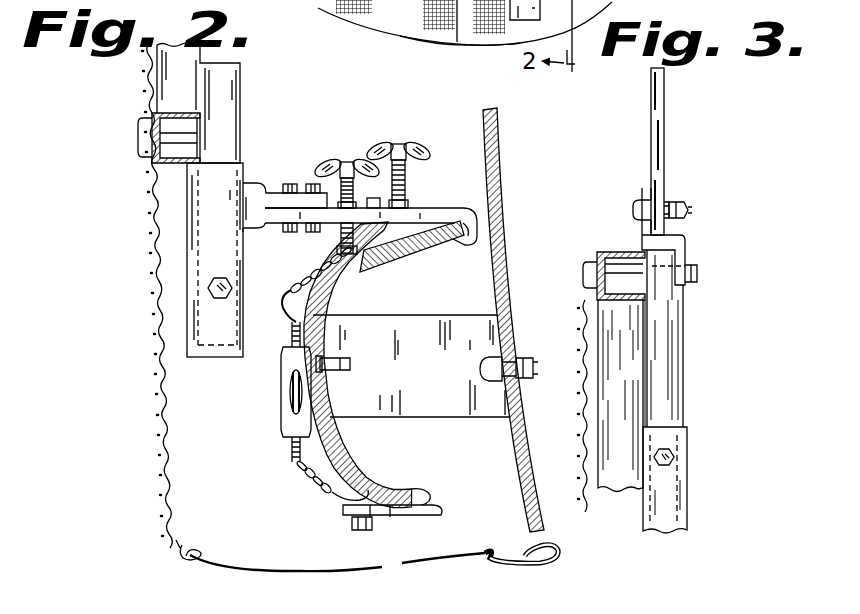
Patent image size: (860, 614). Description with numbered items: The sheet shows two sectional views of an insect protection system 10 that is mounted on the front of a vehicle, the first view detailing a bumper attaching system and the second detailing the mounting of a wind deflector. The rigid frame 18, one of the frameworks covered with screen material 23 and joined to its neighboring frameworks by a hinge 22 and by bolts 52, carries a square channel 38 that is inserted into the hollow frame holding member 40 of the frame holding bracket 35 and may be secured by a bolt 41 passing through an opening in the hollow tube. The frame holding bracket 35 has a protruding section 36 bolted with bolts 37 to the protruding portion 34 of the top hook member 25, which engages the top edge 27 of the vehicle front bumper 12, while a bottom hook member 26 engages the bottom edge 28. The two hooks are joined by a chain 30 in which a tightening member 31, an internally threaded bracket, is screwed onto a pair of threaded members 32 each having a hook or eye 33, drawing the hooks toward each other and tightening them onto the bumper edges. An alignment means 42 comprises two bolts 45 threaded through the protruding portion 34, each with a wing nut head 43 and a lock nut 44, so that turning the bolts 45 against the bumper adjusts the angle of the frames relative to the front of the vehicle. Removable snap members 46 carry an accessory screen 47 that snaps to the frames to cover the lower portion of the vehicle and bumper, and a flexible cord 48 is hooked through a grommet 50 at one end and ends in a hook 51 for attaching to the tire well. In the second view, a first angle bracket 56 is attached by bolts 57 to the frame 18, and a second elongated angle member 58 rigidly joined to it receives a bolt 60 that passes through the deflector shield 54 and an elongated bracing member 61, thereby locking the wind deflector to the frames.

In FIG. 2, the insect protection system 10 is at (481, 47).
In FIG. 2, the vehicle front bumper 12 is at (321, 300).
In FIG. 2, the rigid frame 18 is at (644, 8).
In FIG. 3, the rigid frame 18 is at (668, 332).
In FIG. 2, the hinge 22 is at (279, 8).
In FIG. 2, the screen material 23 is at (457, 42).
In FIG. 3, the screen material 23 is at (586, 308).
In FIG. 2, the top hook member 25 is at (446, 212).
In FIG. 2, the bottom hook member 26 is at (436, 511).
In FIG. 2, the top edge of bumper 27 is at (470, 240).
In FIG. 2, the bottom edge of bumper 28 is at (402, 492).
In FIG. 2, the chain 30 is at (302, 486).
In FIG. 2, the tightening member 31 is at (282, 388).
In FIG. 2, the threaded member 32 is at (290, 338).
In FIG. 2, the hook or eye 33 is at (290, 286).
In FIG. 2, the protruding portion 34 is at (292, 184).
In FIG. 2, the frame holding bracket 35 is at (186, 232).
In FIG. 2, the protruding section 36 is at (284, 200).
In FIG. 2, the bolt 37 is at (346, 170).
In FIG. 2, the square channel 38 is at (212, 76).
In FIG. 2, the hollow frame holding member 40 is at (176, 166).
In FIG. 2, the bolt 41 is at (208, 288).
In FIG. 2, the alignment means 42 is at (348, 166).
In FIG. 2, the wing nut head 43 is at (428, 150).
In FIG. 2, the lock nut 44 is at (394, 150).
In FIG. 2, the bolt 45 is at (372, 260).
In FIG. 2, the removable snap member 46 is at (140, 140).
In FIG. 2, the accessory screen 47 is at (178, 224).
In FIG. 2, the flexible cord 48 is at (282, 568).
In FIG. 2, the grommet 50 is at (178, 553).
In FIG. 2, the hook 51 is at (508, 556).
In FIG. 2, the bolt 52 is at (160, 122).
In FIG. 3, the deflector shield 54 is at (665, 118).
In FIG. 3, the first angle bracket 56 is at (688, 248).
In FIG. 3, the bolt 57 is at (620, 265).
In FIG. 3, the second elongated angle member 58 is at (647, 198).
In FIG. 3, the bolt 60 is at (690, 211).
In FIG. 3, the elongated bracing member 61 is at (672, 197).